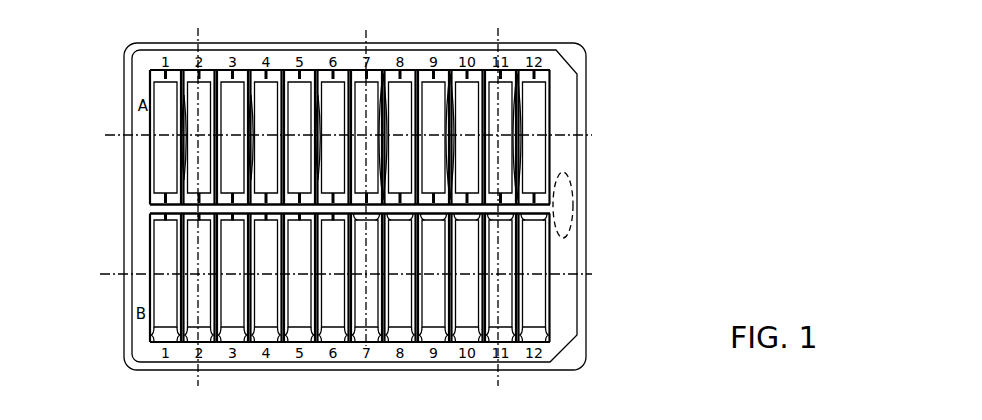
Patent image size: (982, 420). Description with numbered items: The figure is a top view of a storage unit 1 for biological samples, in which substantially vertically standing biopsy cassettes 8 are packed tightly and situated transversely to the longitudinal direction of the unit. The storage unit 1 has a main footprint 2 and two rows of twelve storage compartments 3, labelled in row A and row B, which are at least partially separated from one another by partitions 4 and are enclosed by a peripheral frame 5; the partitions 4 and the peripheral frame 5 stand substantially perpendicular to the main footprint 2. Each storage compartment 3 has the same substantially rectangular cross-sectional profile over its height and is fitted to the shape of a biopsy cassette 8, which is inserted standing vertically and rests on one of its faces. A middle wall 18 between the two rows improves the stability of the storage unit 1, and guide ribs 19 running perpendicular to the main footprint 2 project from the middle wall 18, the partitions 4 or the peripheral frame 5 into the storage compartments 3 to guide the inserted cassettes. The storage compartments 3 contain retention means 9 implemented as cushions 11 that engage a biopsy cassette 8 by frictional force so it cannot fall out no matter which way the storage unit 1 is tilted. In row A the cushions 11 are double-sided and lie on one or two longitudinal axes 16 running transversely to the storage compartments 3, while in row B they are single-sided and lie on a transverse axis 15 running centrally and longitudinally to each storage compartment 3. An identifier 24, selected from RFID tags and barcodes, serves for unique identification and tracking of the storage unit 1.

The storage unit 1 is at (724, 47).
The main footprint 2 is at (590, 344).
The storage compartment 3 is at (535, 305).
The partition 4 is at (518, 251).
The peripheral frame 5 is at (288, 53).
The biopsy cassette 8 is at (537, 158).
The retention means 9 is at (528, 88).
The cushion 11 is at (519, 95).
The transverse axis 15 is at (200, 33).
The longitudinal axis 16 is at (590, 137).
The middle wall 18 is at (167, 203).
The guide rib 19 is at (167, 78).
The identifier 24 is at (562, 202).